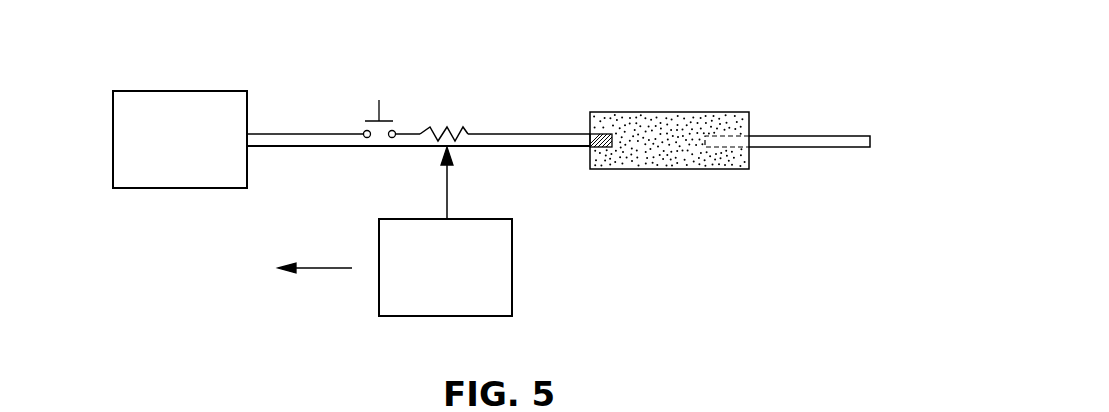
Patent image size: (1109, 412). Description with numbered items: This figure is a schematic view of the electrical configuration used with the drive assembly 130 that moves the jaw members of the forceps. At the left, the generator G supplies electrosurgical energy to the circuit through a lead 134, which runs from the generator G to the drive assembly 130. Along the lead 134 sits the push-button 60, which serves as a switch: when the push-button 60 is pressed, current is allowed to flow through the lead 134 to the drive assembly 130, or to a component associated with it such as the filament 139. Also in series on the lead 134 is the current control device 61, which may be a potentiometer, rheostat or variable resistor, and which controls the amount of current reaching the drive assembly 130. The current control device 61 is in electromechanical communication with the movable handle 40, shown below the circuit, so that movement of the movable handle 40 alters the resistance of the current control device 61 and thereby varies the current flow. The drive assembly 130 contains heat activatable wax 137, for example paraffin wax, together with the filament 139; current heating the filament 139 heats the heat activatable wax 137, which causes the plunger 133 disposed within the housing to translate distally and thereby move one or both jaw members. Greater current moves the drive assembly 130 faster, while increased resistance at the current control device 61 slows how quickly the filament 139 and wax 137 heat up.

The generator G is at (146, 91).
The movable handle 40 is at (483, 219).
The push-button 60 is at (372, 117).
The current control device 61 is at (453, 113).
The drive assembly 130 is at (730, 108).
The plunger 133 is at (850, 136).
The lead 134 is at (500, 134).
The heat activatable wax 137 is at (654, 148).
The filament 139 is at (602, 134).